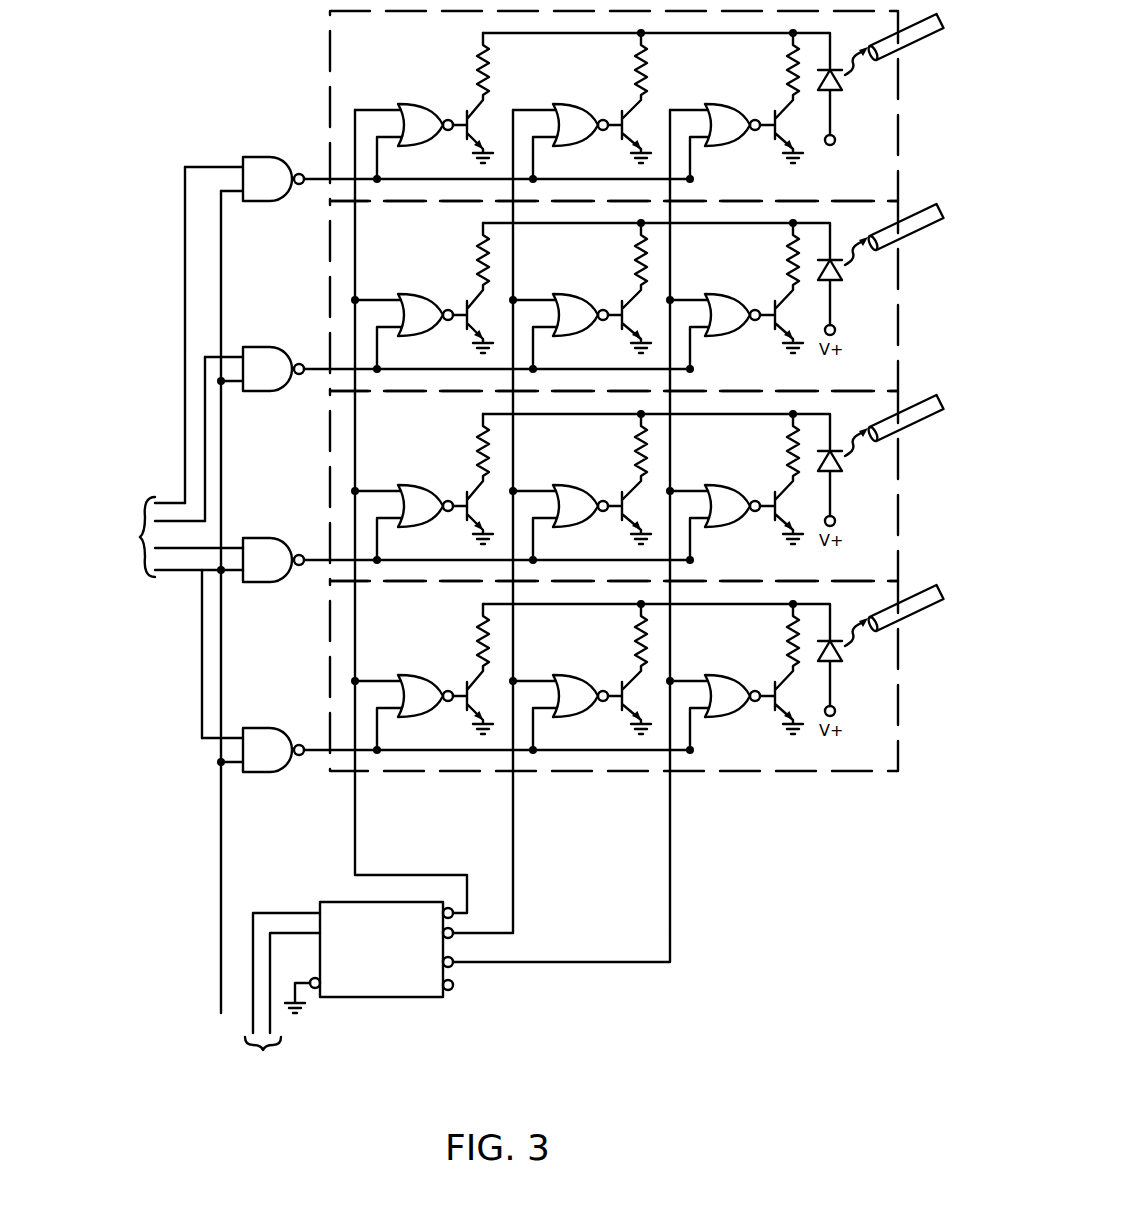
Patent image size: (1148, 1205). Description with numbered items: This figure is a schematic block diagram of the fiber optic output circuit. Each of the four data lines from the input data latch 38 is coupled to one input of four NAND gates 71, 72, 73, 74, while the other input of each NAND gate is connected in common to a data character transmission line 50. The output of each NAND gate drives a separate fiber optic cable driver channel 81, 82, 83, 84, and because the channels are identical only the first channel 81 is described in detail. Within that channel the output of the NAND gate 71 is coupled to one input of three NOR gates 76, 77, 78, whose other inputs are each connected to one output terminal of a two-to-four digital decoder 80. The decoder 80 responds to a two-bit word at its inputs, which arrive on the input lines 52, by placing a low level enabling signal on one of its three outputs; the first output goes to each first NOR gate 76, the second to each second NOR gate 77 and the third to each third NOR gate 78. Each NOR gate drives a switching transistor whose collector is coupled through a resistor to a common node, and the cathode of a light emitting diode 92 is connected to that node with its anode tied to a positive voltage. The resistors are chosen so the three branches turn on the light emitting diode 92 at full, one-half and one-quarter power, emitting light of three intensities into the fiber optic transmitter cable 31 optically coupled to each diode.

The fiber optic transmitter cable 31 is at (905, 48).
The input data latch 38 is at (127, 604).
The data character transmission line 50 is at (218, 930).
The input lines 52 is at (280, 996).
The NAND gate 71 is at (260, 157).
The NAND gate 72 is at (268, 347).
The NAND gate 73 is at (268, 538).
The NAND gate 74 is at (268, 728).
The first NOR gate 76 is at (424, 104).
The second NOR gate 77 is at (578, 104).
The third NOR gate 78 is at (730, 104).
The 2 to 4 digital decoder 80 is at (393, 949).
The fiber optic cable driver channel 81 is at (375, 39).
The fiber optic cable driver channel 82 is at (407, 234).
The fiber optic cable driver channel 83 is at (407, 424).
The fiber optic cable driver channel 84 is at (463, 611).
The light emitting diode 92 is at (840, 92).